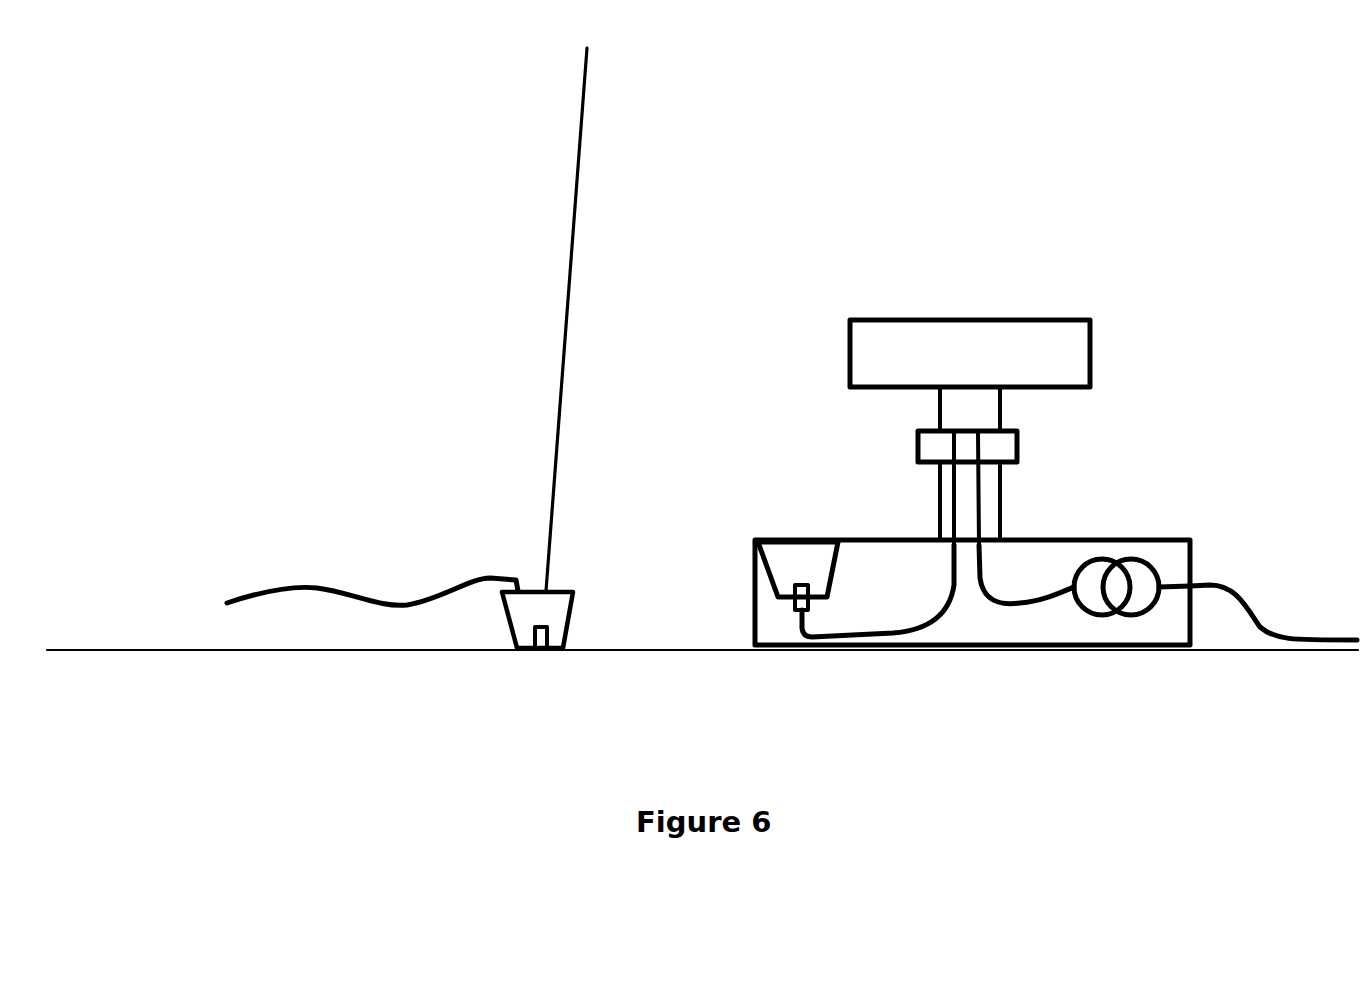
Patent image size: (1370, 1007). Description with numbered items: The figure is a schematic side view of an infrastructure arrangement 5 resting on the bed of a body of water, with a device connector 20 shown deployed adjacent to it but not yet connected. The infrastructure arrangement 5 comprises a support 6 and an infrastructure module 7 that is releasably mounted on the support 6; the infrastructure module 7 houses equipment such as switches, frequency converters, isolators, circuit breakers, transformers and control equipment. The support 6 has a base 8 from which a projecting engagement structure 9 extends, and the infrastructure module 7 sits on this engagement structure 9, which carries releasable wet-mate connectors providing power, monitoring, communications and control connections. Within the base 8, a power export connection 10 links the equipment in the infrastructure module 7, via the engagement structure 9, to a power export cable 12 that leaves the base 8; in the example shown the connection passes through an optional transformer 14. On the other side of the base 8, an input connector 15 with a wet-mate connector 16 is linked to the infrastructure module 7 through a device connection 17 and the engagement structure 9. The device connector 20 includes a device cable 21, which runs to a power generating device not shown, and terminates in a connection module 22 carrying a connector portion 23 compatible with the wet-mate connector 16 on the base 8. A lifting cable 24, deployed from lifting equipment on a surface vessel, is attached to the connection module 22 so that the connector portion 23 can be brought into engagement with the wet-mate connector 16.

The infrastructure arrangement 5 is at (1137, 158).
The support 6 is at (1178, 420).
The infrastructure module 7 is at (1080, 342).
The base 8 is at (1175, 548).
The engagement structure 9 is at (1004, 488).
The power export connection 10 is at (1023, 607).
The power export cable 12 is at (1258, 633).
The transformer 14 is at (1118, 620).
The input connector 15 is at (783, 557).
The wet-mate connector 16 is at (797, 602).
The device connection 17 is at (895, 630).
The device connector 20 is at (326, 537).
The device cable 21 is at (353, 596).
The connection module 22 is at (564, 599).
The connector portion 23 is at (548, 635).
The lifting cable 24 is at (572, 243).